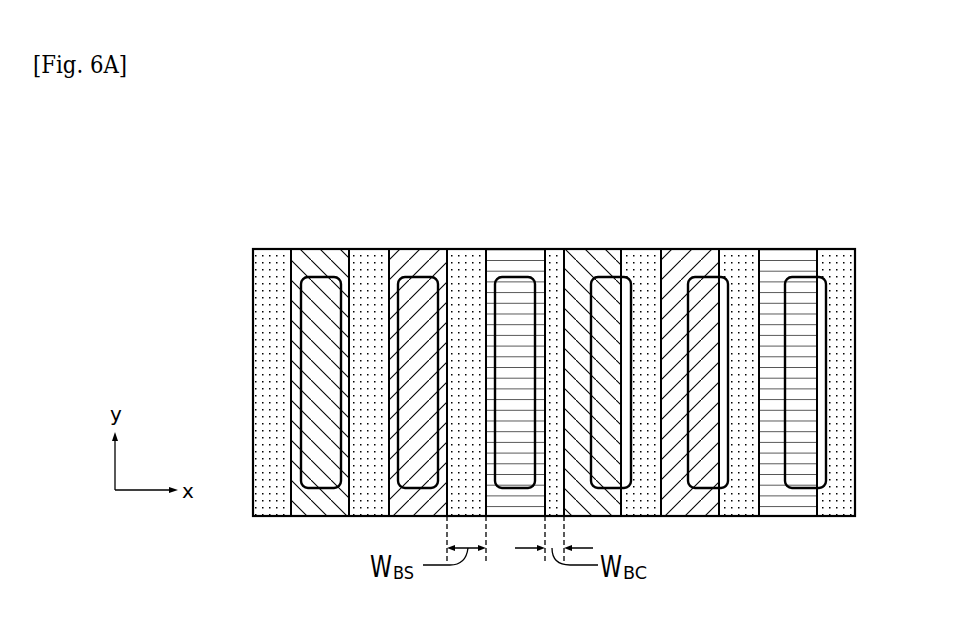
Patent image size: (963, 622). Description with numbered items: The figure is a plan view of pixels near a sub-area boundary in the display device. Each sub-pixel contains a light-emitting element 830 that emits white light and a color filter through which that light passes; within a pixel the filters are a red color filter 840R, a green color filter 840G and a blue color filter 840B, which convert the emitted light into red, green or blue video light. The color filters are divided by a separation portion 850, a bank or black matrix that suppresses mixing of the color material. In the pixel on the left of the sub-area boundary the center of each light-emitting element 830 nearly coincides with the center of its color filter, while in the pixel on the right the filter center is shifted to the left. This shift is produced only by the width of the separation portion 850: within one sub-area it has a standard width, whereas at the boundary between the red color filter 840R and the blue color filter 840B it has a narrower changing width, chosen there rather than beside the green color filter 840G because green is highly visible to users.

The red color filter 840R is at (324, 249).
The green color filter 840G is at (418, 249).
The blue color filter 840B is at (517, 249).
The separation portion 850 is at (553, 249).
The light-emitting element 830 is at (805, 276).